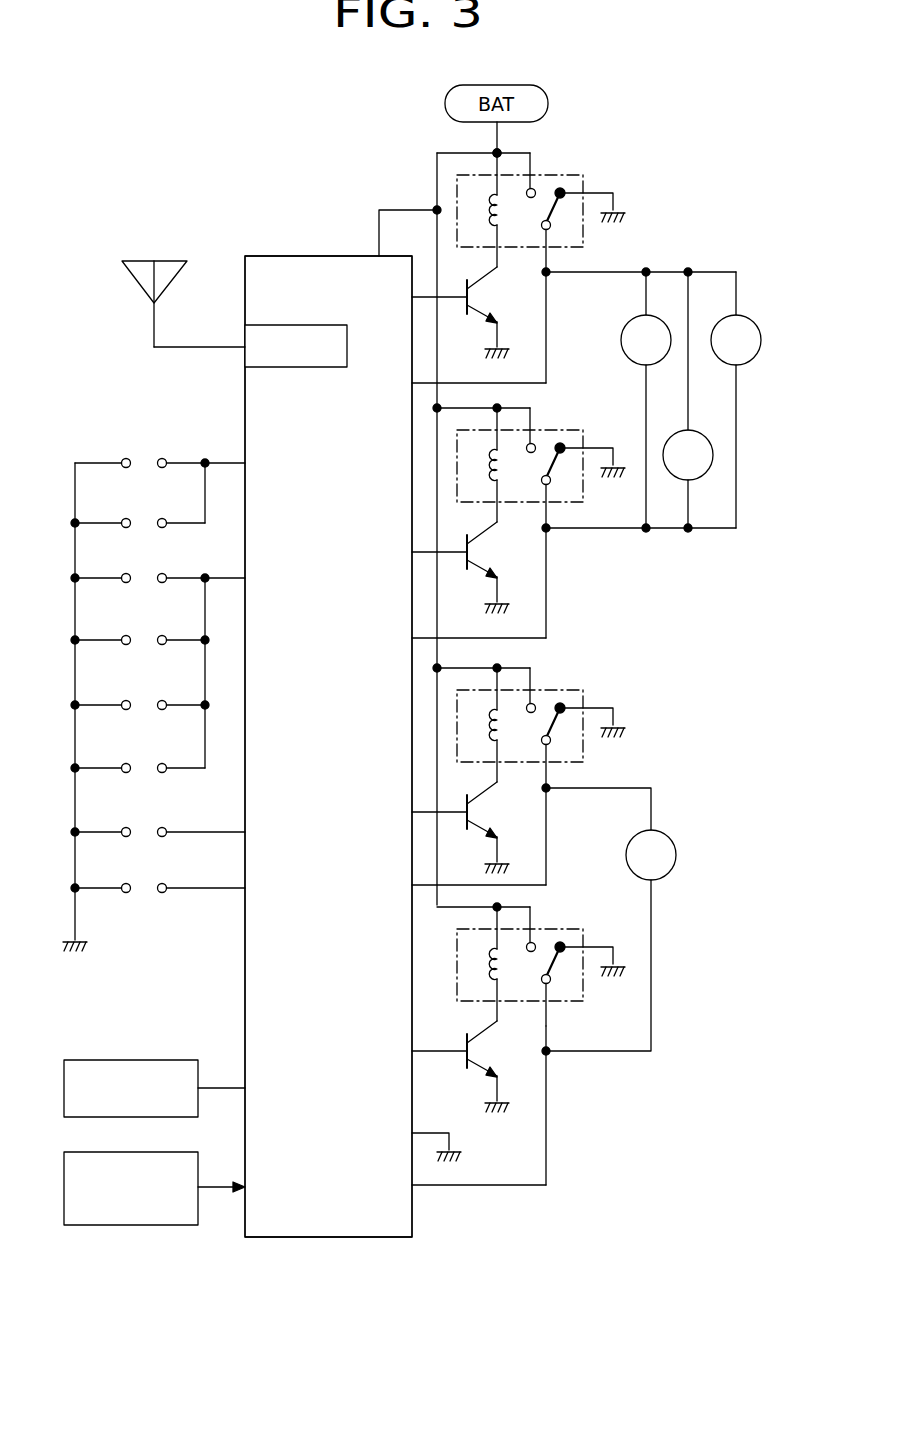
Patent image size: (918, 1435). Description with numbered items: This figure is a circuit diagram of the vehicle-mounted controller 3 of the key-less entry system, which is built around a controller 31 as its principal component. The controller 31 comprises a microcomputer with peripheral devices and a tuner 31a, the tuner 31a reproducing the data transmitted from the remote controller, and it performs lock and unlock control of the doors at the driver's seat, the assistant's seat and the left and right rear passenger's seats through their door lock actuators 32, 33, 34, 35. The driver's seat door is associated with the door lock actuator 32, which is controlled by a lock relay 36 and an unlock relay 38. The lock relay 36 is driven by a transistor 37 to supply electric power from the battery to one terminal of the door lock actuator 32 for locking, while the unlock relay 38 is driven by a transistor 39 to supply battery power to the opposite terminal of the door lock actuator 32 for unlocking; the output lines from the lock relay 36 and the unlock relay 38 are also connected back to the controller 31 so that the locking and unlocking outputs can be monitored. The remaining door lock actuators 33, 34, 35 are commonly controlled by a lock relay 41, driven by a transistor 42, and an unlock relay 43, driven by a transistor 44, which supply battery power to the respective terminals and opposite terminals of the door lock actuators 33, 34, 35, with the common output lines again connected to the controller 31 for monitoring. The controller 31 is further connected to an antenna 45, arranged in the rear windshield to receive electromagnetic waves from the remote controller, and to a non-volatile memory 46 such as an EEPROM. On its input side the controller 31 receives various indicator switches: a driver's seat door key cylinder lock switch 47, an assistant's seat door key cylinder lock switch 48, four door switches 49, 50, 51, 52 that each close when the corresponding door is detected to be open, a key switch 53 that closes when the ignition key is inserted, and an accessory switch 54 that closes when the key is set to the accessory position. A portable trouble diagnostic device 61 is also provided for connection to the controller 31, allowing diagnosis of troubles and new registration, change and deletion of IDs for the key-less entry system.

The vehicle-mounted controller 3 is at (300, 166).
The controller 31 is at (275, 256).
The tuner 31a is at (290, 325).
The door lock actuator 32 is at (672, 838).
The door lock actuator 33 is at (623, 328).
The door lock actuator 34 is at (712, 465).
The door lock actuator 35 is at (757, 358).
The lock relay 36 is at (548, 688).
The transistor 37 is at (467, 827).
The unlock relay 38 is at (548, 929).
The transistor 39 is at (467, 1066).
The lock relay 41 is at (545, 176).
The transistor 42 is at (467, 312).
The unlock relay 43 is at (545, 431).
The transistor 44 is at (467, 567).
The antenna 45 is at (146, 261).
The non-volatile memory 46 is at (128, 1060).
The driver's seat door key cylinder lock switch 47 is at (124, 448).
The assistant's seat door key cylinder lock switch 48 is at (124, 508).
The door switch 49 is at (124, 563).
The door switch 50 is at (124, 625).
The door switch 51 is at (124, 690).
The door switch 52 is at (124, 753).
The key switch 53 is at (124, 817).
The accessory switch 54 is at (124, 873).
The trouble diagnostic device 61 is at (128, 1226).